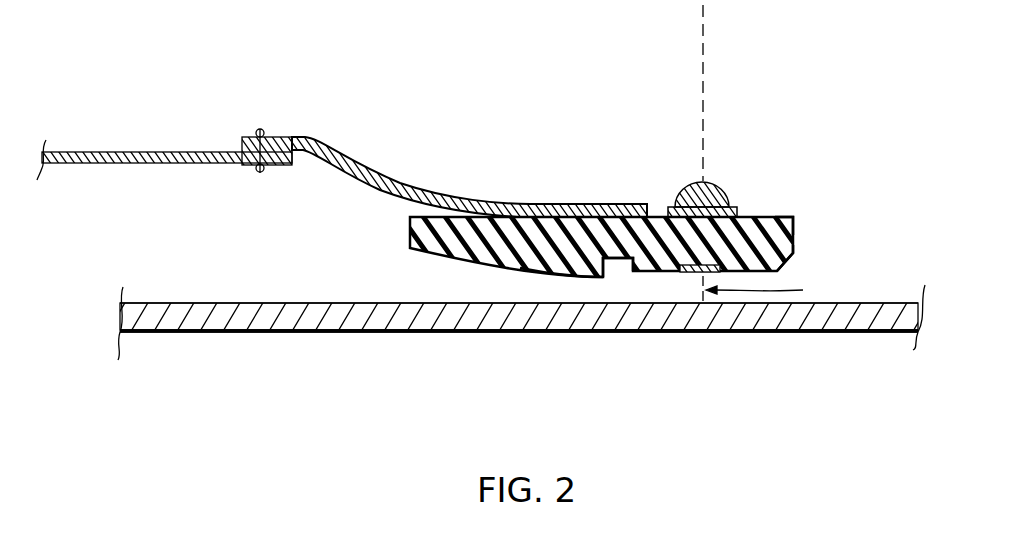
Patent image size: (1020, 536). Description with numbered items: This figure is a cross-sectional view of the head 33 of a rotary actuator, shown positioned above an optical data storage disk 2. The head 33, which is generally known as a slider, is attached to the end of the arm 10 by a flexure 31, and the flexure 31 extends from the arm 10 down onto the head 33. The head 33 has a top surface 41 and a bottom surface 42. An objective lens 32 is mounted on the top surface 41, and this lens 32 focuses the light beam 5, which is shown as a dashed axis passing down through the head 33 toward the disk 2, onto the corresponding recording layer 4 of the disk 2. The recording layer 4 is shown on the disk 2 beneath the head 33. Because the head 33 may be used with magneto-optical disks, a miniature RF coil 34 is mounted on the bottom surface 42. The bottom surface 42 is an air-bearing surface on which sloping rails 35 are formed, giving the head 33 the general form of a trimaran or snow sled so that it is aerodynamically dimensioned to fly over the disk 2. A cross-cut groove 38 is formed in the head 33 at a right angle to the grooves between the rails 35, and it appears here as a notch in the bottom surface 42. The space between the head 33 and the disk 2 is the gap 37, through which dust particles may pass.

The optical data storage disk 2 is at (218, 318).
The recording layer 4 is at (160, 304).
The light beam 5 is at (704, 33).
The arm 10 is at (165, 165).
The flexure 31 is at (338, 152).
The objective lens 32 is at (686, 186).
The head 33 is at (797, 231).
The miniature RF coil 34 is at (693, 278).
The sloping rail 35 is at (797, 256).
The gap 37 is at (772, 292).
The cross-cut groove 38 is at (623, 262).
The top surface 41 is at (786, 216).
The bottom surface 42 is at (585, 285).